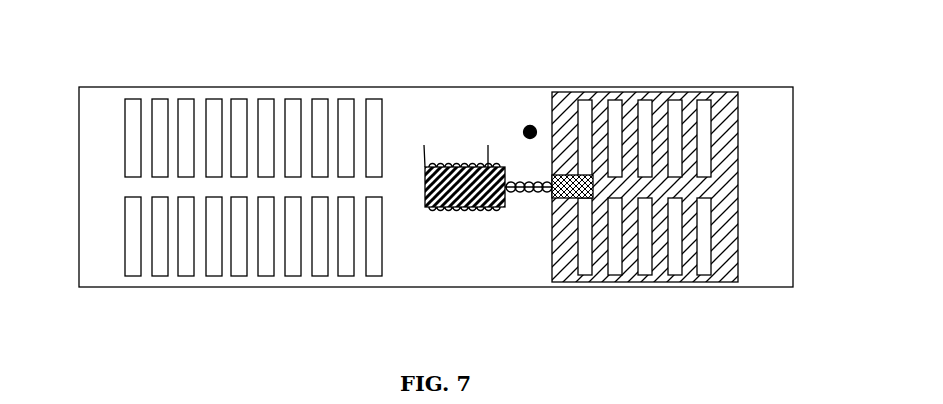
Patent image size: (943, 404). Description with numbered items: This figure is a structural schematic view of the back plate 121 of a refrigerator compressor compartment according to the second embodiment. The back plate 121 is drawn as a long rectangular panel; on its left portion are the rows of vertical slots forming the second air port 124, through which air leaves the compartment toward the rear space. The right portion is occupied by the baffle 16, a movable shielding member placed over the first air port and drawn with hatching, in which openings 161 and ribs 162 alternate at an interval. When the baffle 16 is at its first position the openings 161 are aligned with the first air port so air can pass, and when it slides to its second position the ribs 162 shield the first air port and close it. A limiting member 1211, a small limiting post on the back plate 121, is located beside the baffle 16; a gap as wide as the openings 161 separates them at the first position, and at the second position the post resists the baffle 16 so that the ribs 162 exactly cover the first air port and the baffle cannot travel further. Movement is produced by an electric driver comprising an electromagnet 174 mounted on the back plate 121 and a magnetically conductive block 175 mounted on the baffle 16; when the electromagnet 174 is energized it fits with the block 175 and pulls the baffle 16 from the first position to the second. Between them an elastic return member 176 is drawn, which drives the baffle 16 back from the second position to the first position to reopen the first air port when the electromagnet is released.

The back plate 121 is at (757, 283).
The second air port 124 is at (216, 133).
The baffle 16 is at (565, 112).
The openings 161 is at (712, 130).
The ribs 162 is at (631, 108).
The limiting member 1211 is at (529, 126).
The electromagnet 174 is at (450, 208).
The magnetically conductive block 175 is at (572, 232).
The elastic return member 176 is at (527, 192).